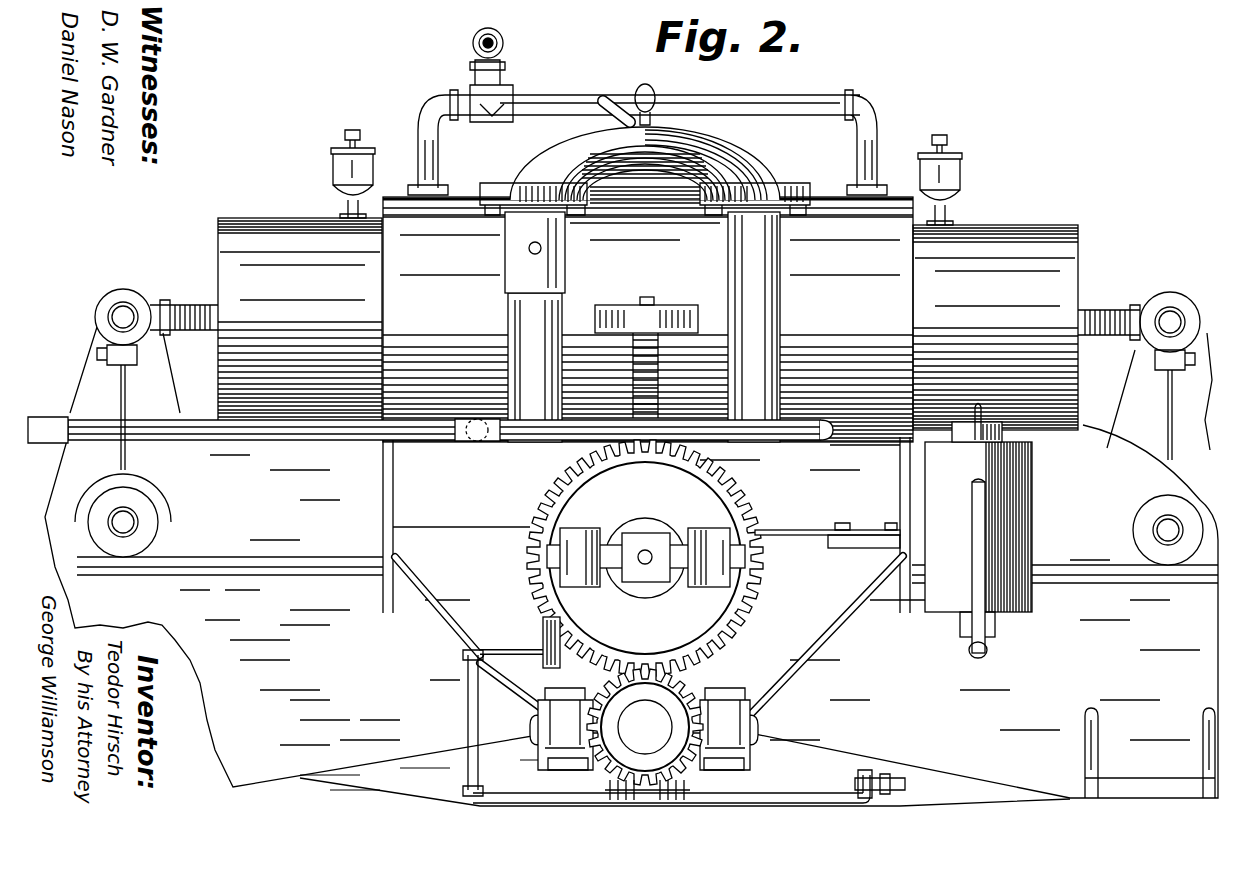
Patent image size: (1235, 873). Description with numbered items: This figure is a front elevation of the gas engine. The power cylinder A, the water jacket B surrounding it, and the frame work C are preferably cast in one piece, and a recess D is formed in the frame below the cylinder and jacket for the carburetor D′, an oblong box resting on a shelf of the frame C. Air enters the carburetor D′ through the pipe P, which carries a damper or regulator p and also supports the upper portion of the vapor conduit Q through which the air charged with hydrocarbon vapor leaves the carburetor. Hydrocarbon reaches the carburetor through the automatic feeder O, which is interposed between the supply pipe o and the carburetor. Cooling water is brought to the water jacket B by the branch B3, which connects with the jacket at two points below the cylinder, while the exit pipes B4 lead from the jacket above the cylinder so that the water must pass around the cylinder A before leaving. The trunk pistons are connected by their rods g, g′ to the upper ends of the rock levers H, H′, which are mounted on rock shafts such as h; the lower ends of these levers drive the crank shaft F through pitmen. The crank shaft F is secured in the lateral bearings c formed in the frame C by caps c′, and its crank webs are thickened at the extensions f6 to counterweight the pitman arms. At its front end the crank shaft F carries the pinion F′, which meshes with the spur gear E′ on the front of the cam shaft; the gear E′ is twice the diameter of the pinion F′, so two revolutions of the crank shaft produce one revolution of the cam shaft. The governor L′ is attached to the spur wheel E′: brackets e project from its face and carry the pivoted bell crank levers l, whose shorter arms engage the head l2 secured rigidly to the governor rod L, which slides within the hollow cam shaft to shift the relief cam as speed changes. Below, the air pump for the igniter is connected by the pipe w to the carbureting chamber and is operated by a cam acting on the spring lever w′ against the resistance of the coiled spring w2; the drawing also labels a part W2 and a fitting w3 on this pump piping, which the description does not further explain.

The power cylinder A is at (648, 280).
The water jacket B is at (648, 319).
The water supply pipe branch B3 is at (430, 430).
The exit pipes B4 is at (654, 111).
The vapor conduit Q is at (645, 284).
The air pipe P is at (535, 367).
The damper p is at (535, 252).
The coiled spring w2 is at (646, 357).
The piston rod g is at (144, 379).
The piston rod g' is at (1145, 376).
The piston rod g′ is at (1145, 376).
The rock lever H is at (93, 455).
The rock lever H' is at (1145, 437).
The rock lever H′ is at (1145, 437).
The rock shaft h is at (639, 519).
The frame work C is at (631, 615).
The governor rod L is at (757, 683).
The recess D is at (359, 478).
The carburetor D' is at (662, 488).
The carburetor D′ is at (662, 488).
The spur gear E' is at (645, 558).
The spur gear E′ is at (645, 558).
The arms or brackets e is at (646, 559).
The governor L' is at (646, 554).
The governor L′ is at (646, 554).
The bell crank levers l is at (645, 557).
The head or socket piece l2 is at (650, 565).
The pipe w is at (650, 679).
The spring lever w' is at (827, 530).
The spring lever w′ is at (827, 530).
The rack W2 is at (569, 674).
The fitting w3 is at (885, 791).
The lateral bearings c is at (644, 729).
The caps c' is at (646, 749).
The caps c′ is at (646, 749).
The crank shaft F is at (645, 727).
The pinion F' is at (647, 781).
The pinion F′ is at (647, 781).
The web extensions f6 is at (710, 784).
The automatic feeder O is at (978, 521).
The supply pipe o is at (968, 586).